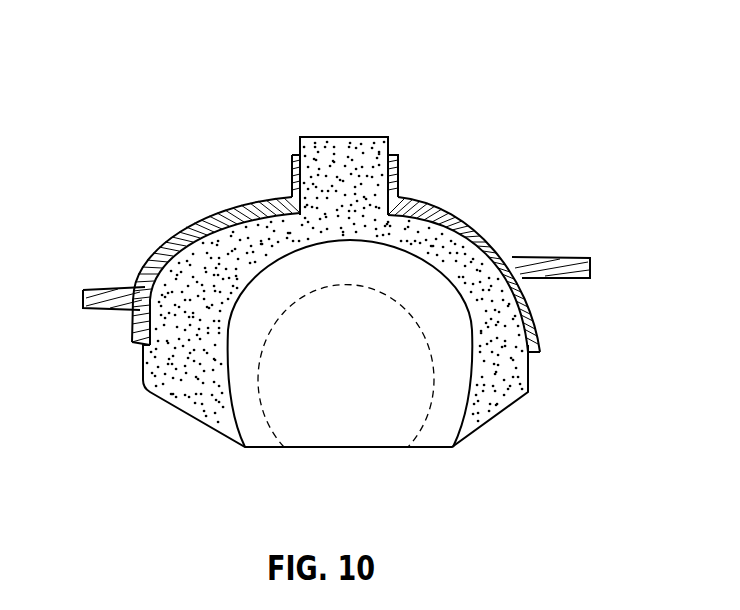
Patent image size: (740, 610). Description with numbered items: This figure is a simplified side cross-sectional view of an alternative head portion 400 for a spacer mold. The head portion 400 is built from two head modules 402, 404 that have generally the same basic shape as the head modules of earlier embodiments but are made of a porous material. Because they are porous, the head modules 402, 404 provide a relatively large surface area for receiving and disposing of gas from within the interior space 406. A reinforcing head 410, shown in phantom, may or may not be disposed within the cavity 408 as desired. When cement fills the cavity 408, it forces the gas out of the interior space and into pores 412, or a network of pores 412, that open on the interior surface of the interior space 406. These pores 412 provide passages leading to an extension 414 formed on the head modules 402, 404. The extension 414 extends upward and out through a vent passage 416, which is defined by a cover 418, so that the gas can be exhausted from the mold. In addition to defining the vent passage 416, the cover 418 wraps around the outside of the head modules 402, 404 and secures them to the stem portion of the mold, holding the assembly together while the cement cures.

The head portion 400 is at (138, 60).
The head module 402 is at (173, 272).
The head module 404 is at (515, 364).
The interior space 406 is at (247, 290).
The cavity 408 is at (463, 428).
The reinforcing head 410 is at (530, 393).
The pores 412 is at (200, 252).
The extension 414 is at (350, 137).
The vent passage 416 is at (392, 176).
The cover 418 is at (468, 214).